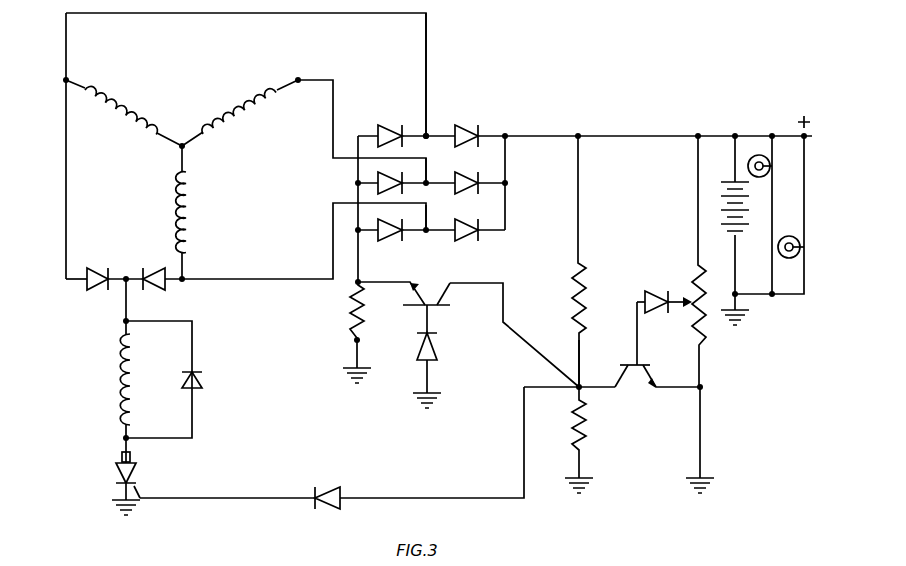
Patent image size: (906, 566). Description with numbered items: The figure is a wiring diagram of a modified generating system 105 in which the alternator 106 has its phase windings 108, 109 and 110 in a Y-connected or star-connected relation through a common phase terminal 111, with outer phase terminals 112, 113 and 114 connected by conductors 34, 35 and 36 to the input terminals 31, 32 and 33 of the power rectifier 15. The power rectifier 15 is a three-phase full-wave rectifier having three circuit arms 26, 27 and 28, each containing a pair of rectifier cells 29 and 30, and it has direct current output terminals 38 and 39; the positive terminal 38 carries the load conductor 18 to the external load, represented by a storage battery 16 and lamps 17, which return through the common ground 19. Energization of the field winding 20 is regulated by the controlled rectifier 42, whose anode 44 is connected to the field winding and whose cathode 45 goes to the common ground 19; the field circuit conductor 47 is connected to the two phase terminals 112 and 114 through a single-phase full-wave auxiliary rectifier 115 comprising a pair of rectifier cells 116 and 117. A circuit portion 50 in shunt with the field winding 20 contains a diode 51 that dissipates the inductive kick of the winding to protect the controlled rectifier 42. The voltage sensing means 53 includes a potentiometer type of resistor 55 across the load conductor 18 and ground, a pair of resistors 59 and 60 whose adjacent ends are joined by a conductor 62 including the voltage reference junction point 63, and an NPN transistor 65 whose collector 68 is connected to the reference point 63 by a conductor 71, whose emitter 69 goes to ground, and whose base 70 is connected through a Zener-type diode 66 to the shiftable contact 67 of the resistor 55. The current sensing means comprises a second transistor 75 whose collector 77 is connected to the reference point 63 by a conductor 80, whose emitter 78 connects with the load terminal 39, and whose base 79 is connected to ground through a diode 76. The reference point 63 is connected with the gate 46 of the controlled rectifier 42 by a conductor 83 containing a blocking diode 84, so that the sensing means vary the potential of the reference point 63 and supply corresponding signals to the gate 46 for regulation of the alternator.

The power rectifier 15 is at (431, 147).
The storage battery 16 is at (722, 196).
The lamps 17 is at (767, 176).
The load conductor 18 is at (640, 134).
The common ground 19 is at (745, 314).
The field winding 20 is at (118, 368).
The circuit arm 26 is at (438, 140).
The circuit arm 27 is at (442, 187).
The circuit arm 28 is at (429, 239).
The rectifier cell 29 is at (390, 125).
The rectifier cell 30 is at (468, 125).
The input terminal 31 is at (429, 134).
The input terminal 32 is at (429, 181).
The input terminal 33 is at (429, 228).
The conductor 34 is at (239, 15).
The conductor 35 is at (334, 110).
The conductor 36 is at (265, 279).
The output terminal 38 is at (510, 141).
The output terminal 39 is at (355, 285).
The controlled rectifier 42 is at (135, 469).
The anode 44 is at (122, 457).
The cathode 45 is at (118, 485).
The gate 46 is at (140, 490).
The field circuit conductor 47 is at (122, 322).
The circuit portion 50 is at (192, 356).
The diode 51 is at (186, 380).
The voltage sensing means 53 is at (660, 282).
The potentiometer type of resistor 55 is at (706, 322).
The resistor 59 is at (575, 283).
The resistor 60 is at (585, 428).
The conductor 62 is at (578, 346).
The voltage reference junction point 63 is at (578, 389).
The transistor 65 is at (626, 365).
The diode 66 is at (650, 295).
The shiftable contact 67 is at (684, 308).
The collector electrode 68 is at (630, 390).
The emitter electrode 69 is at (654, 390).
The base 70 is at (651, 365).
The conductor 71 is at (612, 391).
The transistor 75 is at (423, 307).
The diode 76 is at (440, 346).
The collector electrode 77 is at (448, 289).
The emitter electrode 78 is at (409, 288).
The base 79 is at (404, 306).
The conductor 80 is at (504, 320).
The conductor 83 is at (287, 497).
The blocking diode 84 is at (325, 510).
The generating system 105 is at (562, 134).
The alternator 106 is at (183, 165).
The phase winding 108 is at (124, 112).
The phase winding 109 is at (245, 102).
The phase winding 110 is at (190, 228).
The common phase terminal 111 is at (176, 151).
The phase terminal 112 is at (66, 81).
The phase terminal 113 is at (299, 80).
The phase terminal 114 is at (186, 283).
The auxiliary rectifier 115 is at (124, 269).
The rectifier cell 116 is at (100, 267).
The rectifier cell 117 is at (153, 267).